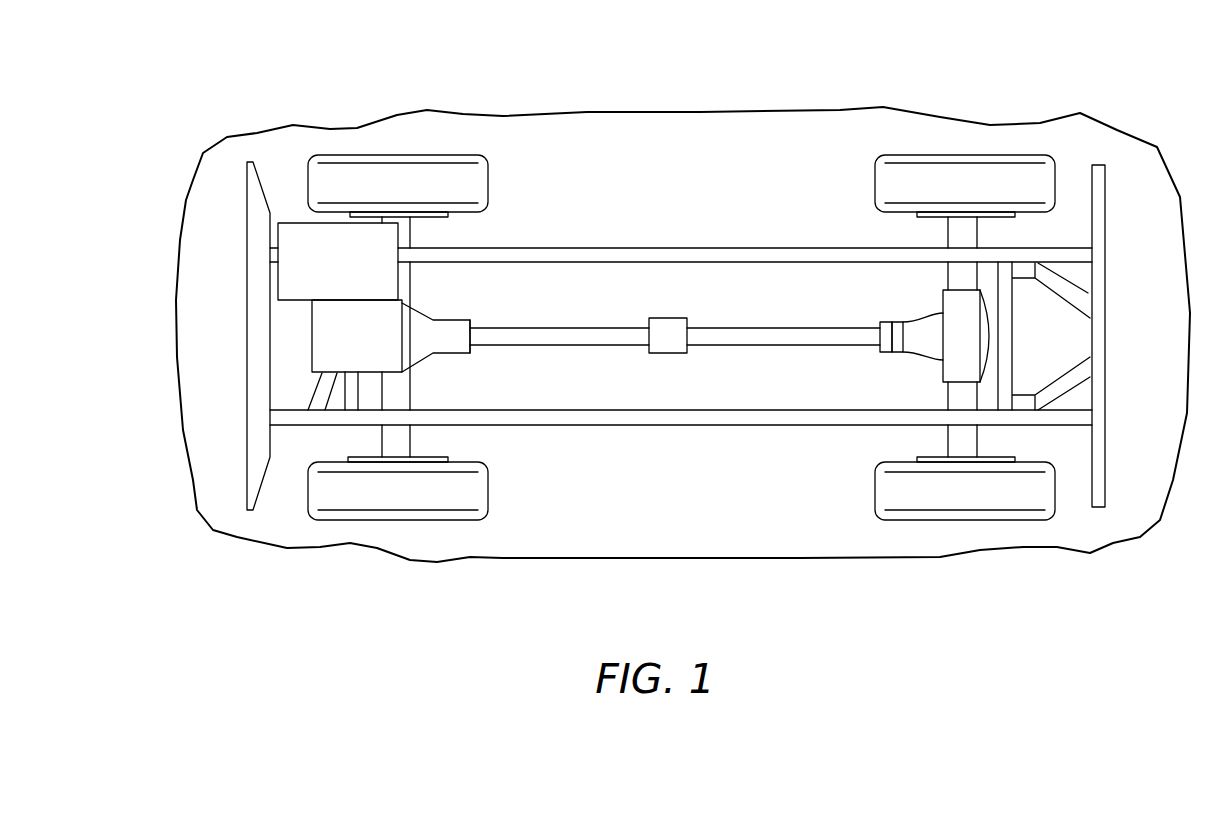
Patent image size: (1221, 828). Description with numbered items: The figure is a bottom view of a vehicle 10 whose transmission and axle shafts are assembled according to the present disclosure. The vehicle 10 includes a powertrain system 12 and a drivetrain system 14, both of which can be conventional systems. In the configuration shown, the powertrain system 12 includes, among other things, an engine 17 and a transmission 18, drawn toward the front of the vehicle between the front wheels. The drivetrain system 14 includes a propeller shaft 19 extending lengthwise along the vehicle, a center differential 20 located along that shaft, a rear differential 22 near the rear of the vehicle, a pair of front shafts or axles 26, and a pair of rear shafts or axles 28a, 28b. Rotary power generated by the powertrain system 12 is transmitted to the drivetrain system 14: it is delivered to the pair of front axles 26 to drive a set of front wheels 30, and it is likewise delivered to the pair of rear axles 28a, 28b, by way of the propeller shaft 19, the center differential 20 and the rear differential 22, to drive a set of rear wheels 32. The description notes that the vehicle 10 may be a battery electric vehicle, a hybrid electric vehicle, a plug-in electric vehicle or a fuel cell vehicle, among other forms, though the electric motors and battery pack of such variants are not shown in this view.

The vehicle 10 is at (490, 561).
The powertrain system 12 is at (302, 357).
The drivetrain system 14 is at (477, 356).
The engine 17 is at (294, 212).
The transmission 18 is at (422, 367).
The propeller shaft 19 is at (560, 328).
The center differential 20 is at (668, 353).
The rear differential 22 is at (920, 317).
The front axles 26 is at (405, 277).
The rear axle 28a is at (957, 236).
The rear axle 28b is at (963, 397).
The front wheels 30 is at (453, 172).
The rear wheels 32 is at (927, 180).